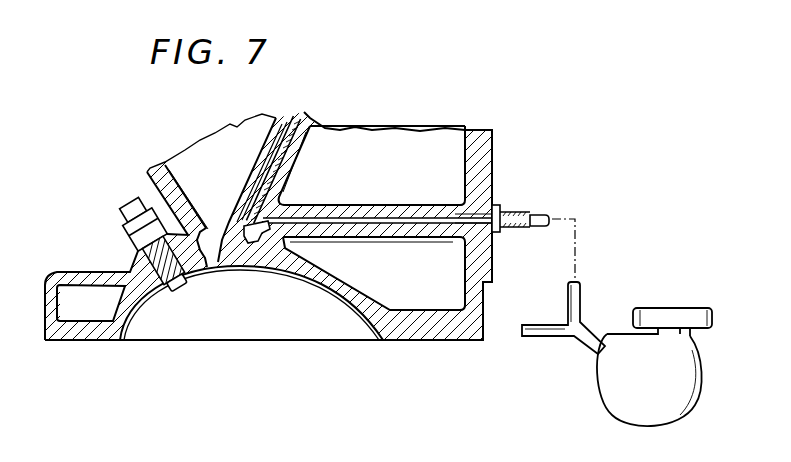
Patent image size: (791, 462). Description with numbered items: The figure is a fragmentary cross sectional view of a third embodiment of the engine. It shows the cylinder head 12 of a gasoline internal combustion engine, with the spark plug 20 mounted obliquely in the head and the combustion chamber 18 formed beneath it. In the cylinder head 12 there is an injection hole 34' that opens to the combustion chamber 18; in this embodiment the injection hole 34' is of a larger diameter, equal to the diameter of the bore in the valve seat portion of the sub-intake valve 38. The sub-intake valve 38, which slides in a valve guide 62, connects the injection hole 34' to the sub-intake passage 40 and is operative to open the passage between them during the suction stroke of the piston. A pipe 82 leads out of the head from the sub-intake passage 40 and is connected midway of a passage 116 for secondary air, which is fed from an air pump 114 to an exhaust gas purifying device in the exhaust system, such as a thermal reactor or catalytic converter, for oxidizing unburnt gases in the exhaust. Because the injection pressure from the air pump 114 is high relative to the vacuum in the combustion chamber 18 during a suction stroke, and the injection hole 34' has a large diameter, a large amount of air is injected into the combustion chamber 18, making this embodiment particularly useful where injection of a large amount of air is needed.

The cylinder head 12 is at (86, 270).
The spark plug 20 is at (135, 232).
The sub-intake valve 38 is at (302, 118).
The valve guide 62 is at (282, 152).
The injection hole 34' is at (243, 267).
The sub-intake passage 40 is at (369, 220).
The combustion chamber 18 is at (318, 329).
The pipe 82 is at (536, 213).
The passage for secondary air 116 is at (549, 338).
The air pump 114 is at (601, 388).